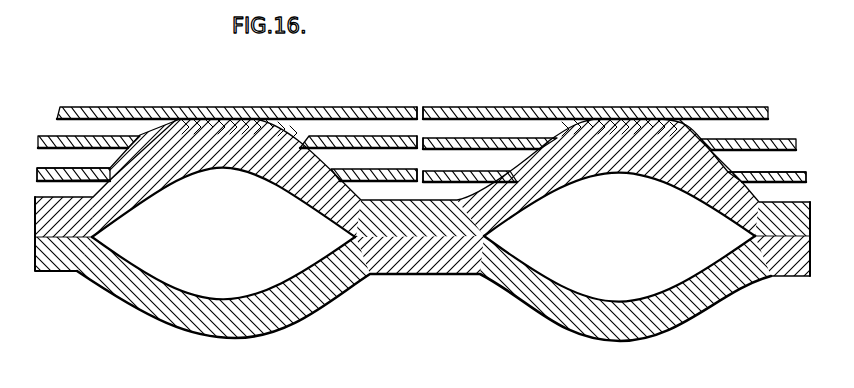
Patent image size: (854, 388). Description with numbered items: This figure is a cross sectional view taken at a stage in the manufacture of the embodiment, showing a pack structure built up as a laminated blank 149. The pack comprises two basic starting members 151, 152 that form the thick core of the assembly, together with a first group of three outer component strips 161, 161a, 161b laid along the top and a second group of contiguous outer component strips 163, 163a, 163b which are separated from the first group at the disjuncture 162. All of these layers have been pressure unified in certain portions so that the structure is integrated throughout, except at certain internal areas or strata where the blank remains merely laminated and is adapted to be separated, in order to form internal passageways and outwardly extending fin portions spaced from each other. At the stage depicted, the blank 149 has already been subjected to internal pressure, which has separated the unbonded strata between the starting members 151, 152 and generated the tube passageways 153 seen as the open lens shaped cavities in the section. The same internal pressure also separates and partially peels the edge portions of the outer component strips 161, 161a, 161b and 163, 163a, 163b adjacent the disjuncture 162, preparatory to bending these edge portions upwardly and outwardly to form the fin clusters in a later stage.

The blank 149 is at (391, 283).
The basic starting member 151 is at (265, 172).
The basic starting member 152 is at (207, 299).
The tube passageway 153 is at (270, 274).
The outer component strip 161 is at (353, 170).
The outer component strip 161a is at (324, 137).
The outer component strip 161b is at (214, 107).
The disjuncture 162 is at (422, 171).
The outer component strip 163 is at (450, 171).
The outer component strip 163a is at (513, 138).
The outer component strip 163b is at (565, 107).